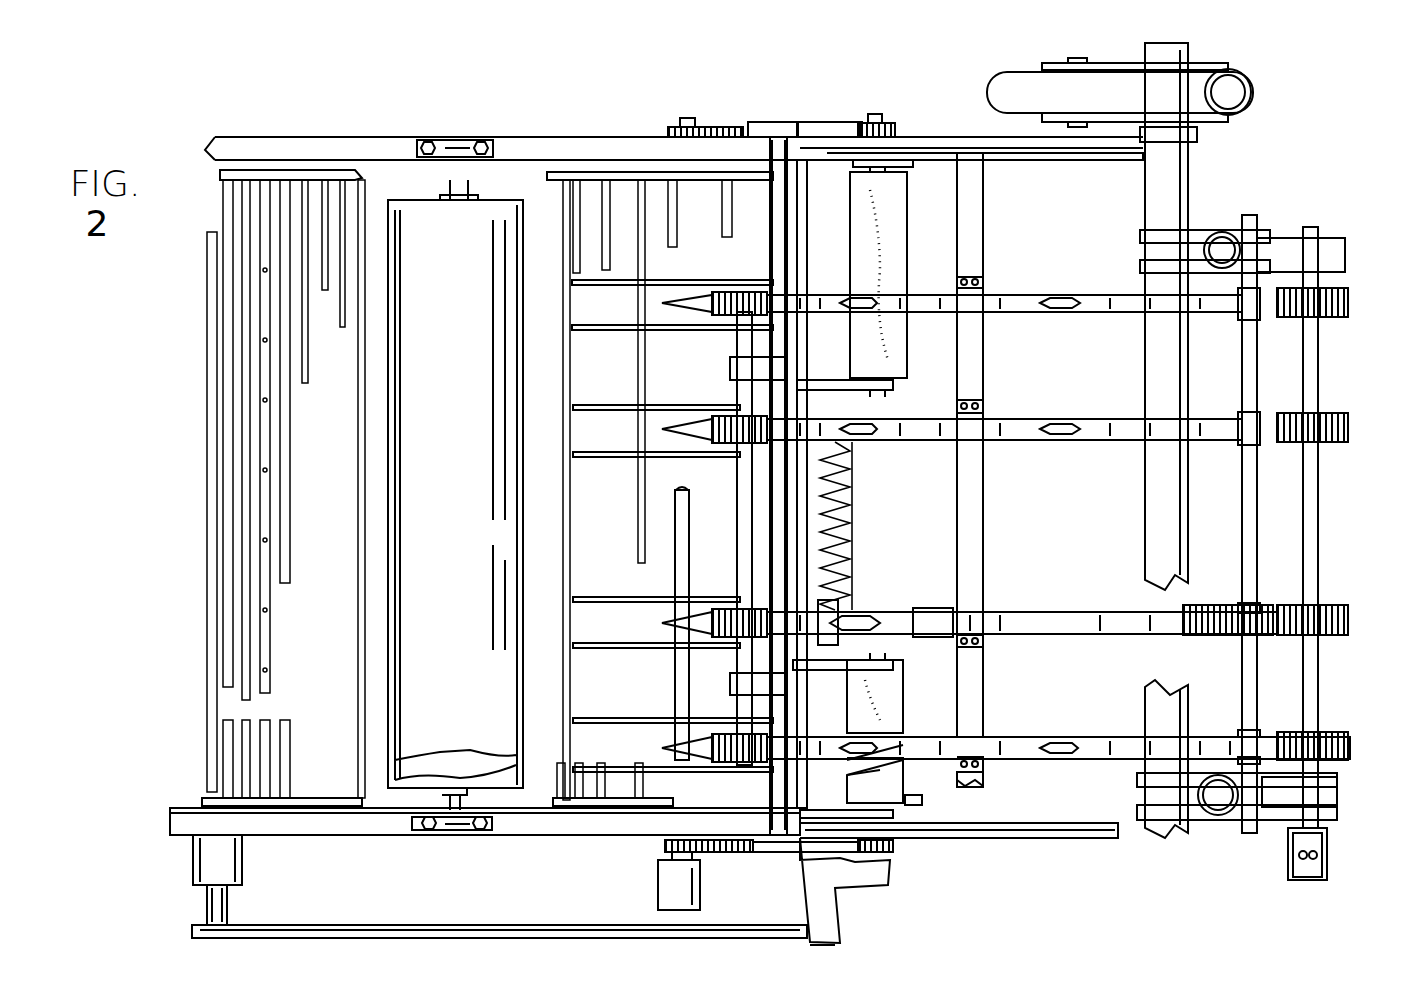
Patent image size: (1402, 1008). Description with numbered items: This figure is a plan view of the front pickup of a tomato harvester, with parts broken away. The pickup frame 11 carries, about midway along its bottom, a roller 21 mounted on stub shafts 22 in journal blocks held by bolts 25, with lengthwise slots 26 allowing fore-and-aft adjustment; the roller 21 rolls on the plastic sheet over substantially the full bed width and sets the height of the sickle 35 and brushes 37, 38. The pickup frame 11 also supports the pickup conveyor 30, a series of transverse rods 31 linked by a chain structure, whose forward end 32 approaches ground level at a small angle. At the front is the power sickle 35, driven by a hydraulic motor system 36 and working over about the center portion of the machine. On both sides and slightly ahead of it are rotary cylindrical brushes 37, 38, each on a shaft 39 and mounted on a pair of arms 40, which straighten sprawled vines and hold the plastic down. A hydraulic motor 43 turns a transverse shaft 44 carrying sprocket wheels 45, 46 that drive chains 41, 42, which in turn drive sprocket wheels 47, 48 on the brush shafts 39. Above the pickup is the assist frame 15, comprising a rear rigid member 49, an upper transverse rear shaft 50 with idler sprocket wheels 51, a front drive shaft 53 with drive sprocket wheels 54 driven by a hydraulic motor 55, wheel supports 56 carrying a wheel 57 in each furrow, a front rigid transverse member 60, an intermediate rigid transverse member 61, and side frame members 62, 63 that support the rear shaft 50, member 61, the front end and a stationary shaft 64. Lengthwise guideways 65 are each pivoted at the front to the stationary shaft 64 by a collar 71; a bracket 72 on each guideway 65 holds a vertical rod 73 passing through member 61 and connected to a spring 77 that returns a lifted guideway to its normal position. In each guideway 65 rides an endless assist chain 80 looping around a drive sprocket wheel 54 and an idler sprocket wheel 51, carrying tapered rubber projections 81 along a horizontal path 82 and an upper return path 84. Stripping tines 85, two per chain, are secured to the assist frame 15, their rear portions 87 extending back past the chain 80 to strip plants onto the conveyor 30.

The pickup frame 11 is at (545, 836).
The assist frame 15 is at (996, 850).
The roller 21 is at (455, 494).
The stub shafts 22 is at (470, 190).
The bolts 25 is at (430, 141).
The lengthwise slots 26 is at (478, 142).
The pickup conveyor 30 is at (190, 443).
The rods 31 is at (358, 458).
The forward end 32 is at (850, 545).
The power sickle 35 is at (850, 518).
The hydraulic motor system 36 is at (845, 891).
The rotary cylindrical brush 37 is at (903, 712).
The rotary cylindrical brush 38 is at (908, 220).
The shaft 39 is at (870, 112).
The arms 40 is at (910, 170).
The chain 41 is at (700, 855).
The chain 42 is at (866, 120).
The hydraulic motor 43 is at (672, 886).
The transverse shaft 44 is at (688, 125).
The sprocket wheel 45 is at (670, 851).
The sprocket wheel 46 is at (678, 120).
The sprocket wheel 47 is at (896, 848).
The sprocket wheel 48 is at (890, 122).
The rear rigid member 49 is at (780, 526).
The upper transverse rear shaft 50 is at (745, 474).
The idler sprocket wheels 51 is at (738, 718).
The drive shaft 53 is at (1320, 505).
The drive sprocket wheels 54 is at (1345, 286).
The hydraulic motor 55 is at (1290, 848).
The wheel supports 56 is at (1132, 62).
The wheel 57 is at (1008, 92).
The front rigid transverse member 60 is at (1147, 500).
The intermediate rigid transverse member 61 is at (978, 506).
The side frame member 62 is at (1060, 822).
The side frame member 63 is at (1085, 152).
The stationary shaft 64 is at (1243, 502).
The guideways 65 is at (1215, 325).
The bracket or collar 71 is at (1215, 318).
The bracket 72 is at (980, 652).
The rod 73 is at (986, 284).
The spring 77 is at (986, 642).
The assist means 80 is at (998, 736).
The flexible projections 81 is at (1072, 314).
The horizontal path 82 is at (893, 612).
The upper return path 84 is at (845, 612).
The stripping tines 85 is at (692, 328).
The rear portion 87 is at (630, 332).